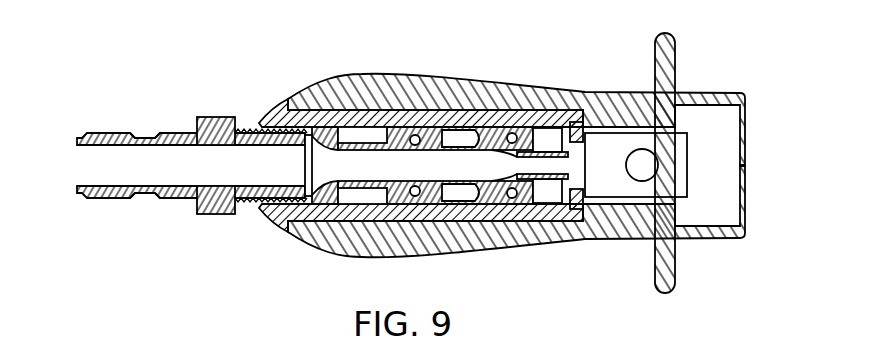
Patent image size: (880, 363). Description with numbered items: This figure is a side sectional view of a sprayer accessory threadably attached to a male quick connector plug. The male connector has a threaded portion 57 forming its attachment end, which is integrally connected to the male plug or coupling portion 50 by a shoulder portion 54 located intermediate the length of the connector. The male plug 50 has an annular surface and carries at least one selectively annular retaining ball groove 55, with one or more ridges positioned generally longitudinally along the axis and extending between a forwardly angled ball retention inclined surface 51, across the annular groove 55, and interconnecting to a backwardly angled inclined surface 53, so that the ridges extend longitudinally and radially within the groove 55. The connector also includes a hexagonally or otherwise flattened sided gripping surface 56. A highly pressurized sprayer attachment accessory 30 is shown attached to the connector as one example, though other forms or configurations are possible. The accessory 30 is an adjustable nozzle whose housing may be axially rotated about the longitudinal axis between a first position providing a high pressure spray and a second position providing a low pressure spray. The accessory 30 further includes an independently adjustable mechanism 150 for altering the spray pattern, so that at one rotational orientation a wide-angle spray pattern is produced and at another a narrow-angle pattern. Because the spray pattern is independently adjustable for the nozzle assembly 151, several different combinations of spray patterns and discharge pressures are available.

The sprayer attachment accessory 30 is at (492, 233).
The male plug 50 is at (107, 132).
The forwardly angled ball retention inclined surface 51 is at (142, 132).
The backwardly angled inclined surface 53 is at (152, 132).
The shoulder portion 54 is at (192, 199).
The annular retaining ball groove 55 is at (146, 199).
The gripping surface 56 is at (221, 216).
The threaded portion 57 is at (248, 131).
The independently adjustable mechanism 150 is at (687, 174).
The nozzle assembly 151 is at (542, 188).